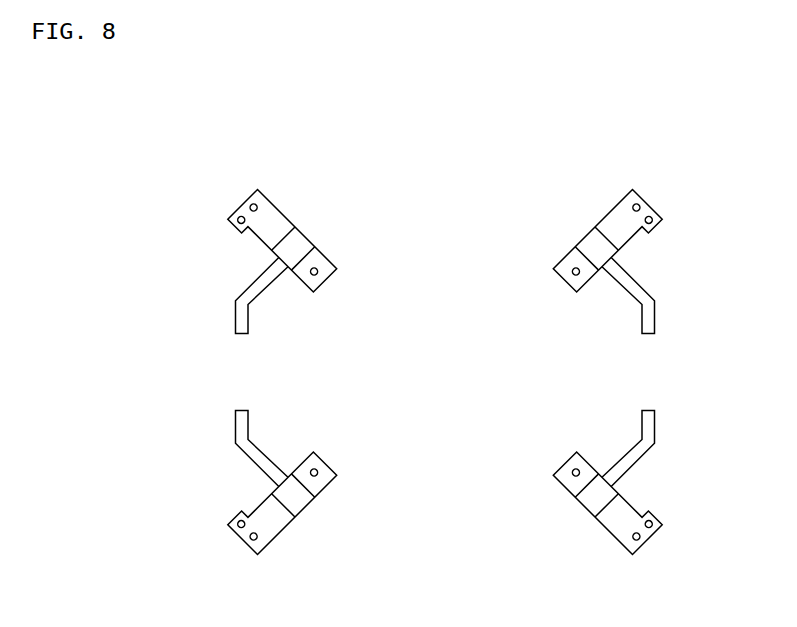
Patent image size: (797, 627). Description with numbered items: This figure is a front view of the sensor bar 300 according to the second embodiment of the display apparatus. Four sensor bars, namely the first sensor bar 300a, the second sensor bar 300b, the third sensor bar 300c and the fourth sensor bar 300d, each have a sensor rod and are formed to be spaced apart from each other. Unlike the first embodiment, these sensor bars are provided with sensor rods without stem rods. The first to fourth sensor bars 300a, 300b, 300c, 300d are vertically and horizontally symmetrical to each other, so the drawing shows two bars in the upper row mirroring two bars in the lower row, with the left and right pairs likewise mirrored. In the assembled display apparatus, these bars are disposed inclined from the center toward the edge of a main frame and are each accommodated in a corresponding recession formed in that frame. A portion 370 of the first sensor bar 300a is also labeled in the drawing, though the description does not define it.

The sensor bar 300 is at (120, 101).
The first sensor bar 300a is at (250, 234).
The second sensor bar 300b is at (645, 238).
The third sensor bar 300c is at (227, 500).
The fourth sensor bar 300d is at (653, 504).
The connecting portion of bracket 370 is at (294, 252).